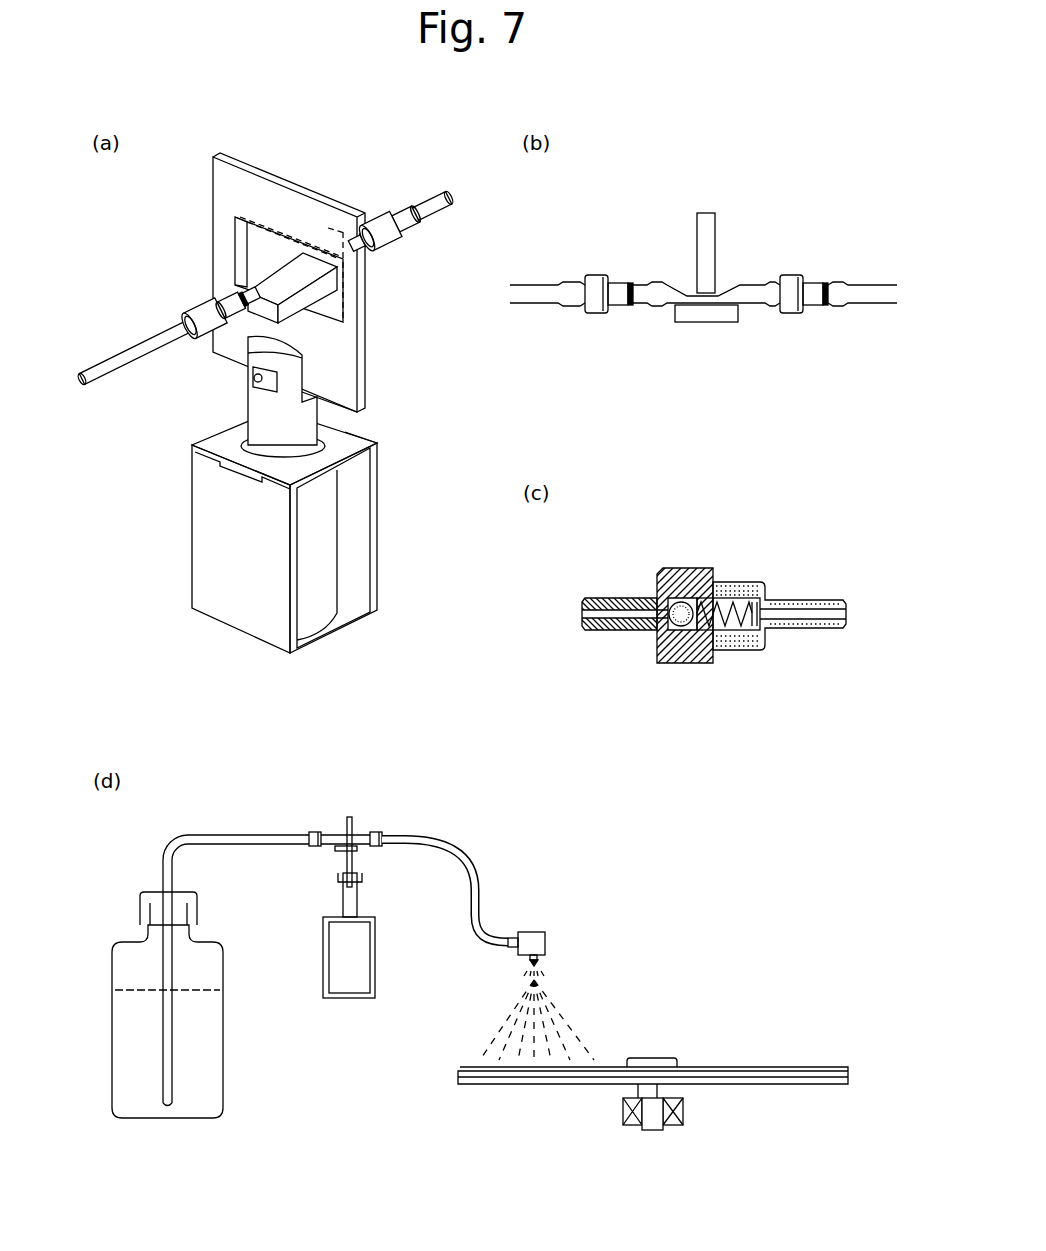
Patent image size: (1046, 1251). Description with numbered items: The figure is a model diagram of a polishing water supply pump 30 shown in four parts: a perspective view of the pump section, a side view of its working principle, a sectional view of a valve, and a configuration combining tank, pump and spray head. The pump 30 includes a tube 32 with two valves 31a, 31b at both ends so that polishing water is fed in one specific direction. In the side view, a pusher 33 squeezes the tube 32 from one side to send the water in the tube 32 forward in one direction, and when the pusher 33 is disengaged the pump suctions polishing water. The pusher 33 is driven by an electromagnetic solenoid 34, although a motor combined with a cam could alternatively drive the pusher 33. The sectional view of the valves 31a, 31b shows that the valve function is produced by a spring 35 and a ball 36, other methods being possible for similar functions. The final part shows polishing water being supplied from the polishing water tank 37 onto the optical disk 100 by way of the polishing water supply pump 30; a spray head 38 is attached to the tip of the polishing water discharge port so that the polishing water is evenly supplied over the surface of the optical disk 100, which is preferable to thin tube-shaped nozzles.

The polishing water supply pump 30 is at (178, 240).
The valve 31a is at (190, 307).
The valve 31b is at (368, 253).
The tube 32 is at (308, 257).
The pusher 33 is at (295, 182).
The electromagnetic solenoid 34 is at (192, 527).
The spring 35 is at (727, 627).
The ball 36 is at (663, 627).
The polishing water tank 37 is at (222, 1043).
The spray head 38 is at (545, 930).
The optical disk 100 is at (765, 1067).